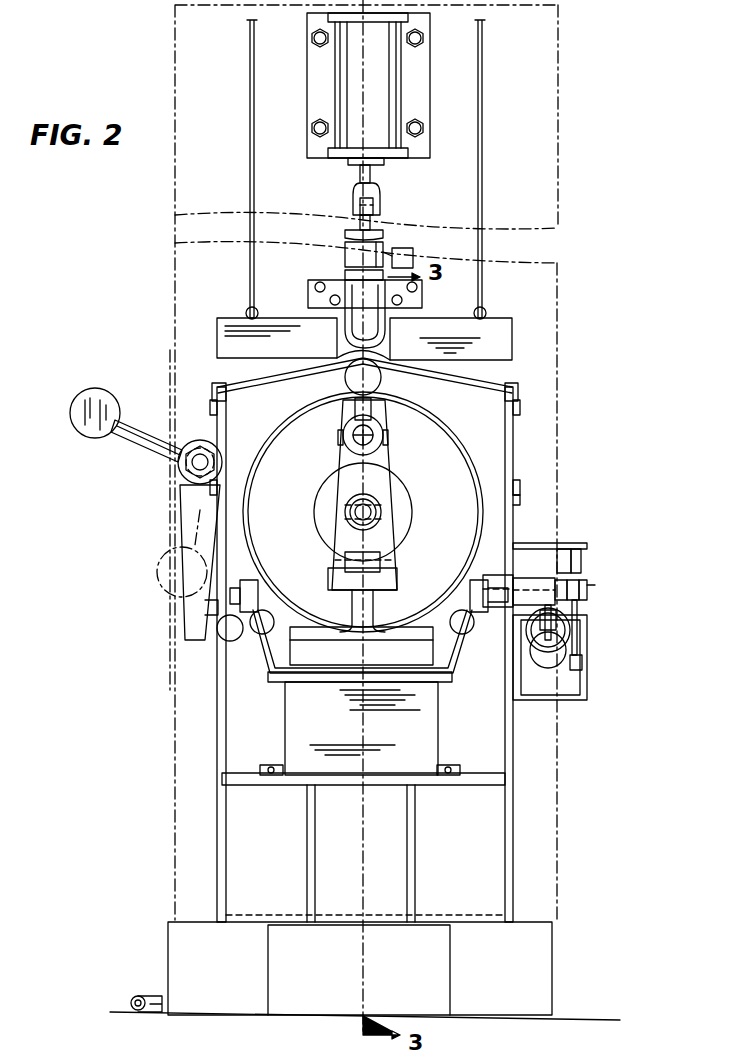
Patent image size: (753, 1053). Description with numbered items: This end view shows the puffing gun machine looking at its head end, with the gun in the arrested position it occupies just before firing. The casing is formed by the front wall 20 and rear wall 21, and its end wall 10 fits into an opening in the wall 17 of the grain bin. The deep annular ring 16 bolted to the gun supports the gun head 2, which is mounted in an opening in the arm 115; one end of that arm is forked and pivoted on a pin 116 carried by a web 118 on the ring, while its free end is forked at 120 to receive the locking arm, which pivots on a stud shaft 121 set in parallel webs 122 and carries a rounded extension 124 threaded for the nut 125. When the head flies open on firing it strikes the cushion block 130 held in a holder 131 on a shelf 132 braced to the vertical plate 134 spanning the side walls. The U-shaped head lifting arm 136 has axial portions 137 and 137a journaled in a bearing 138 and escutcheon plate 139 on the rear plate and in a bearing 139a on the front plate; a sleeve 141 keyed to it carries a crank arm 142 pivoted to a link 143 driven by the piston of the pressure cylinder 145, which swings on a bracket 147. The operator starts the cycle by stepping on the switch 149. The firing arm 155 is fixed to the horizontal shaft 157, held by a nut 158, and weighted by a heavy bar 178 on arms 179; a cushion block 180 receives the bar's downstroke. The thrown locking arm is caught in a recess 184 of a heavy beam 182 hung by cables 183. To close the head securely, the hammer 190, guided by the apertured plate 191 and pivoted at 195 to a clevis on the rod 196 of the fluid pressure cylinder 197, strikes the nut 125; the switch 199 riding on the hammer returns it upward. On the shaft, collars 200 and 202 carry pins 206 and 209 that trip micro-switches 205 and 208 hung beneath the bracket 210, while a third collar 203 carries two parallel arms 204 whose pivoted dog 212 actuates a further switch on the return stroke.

The gun head 2 is at (410, 510).
The end wall 10 is at (490, 387).
The annular ring 16 is at (470, 473).
The wall of the bin 17 is at (570, 203).
The front wall 20 is at (217, 680).
The rear wall 21 is at (520, 500).
The arm 115 is at (390, 487).
The pin 116 is at (385, 575).
The web 118 is at (375, 603).
The fork 120 is at (368, 465).
The stud shaft 121 is at (383, 437).
The parallel webs 122 is at (372, 405).
The rounded extension 124 is at (375, 445).
The nut 125 is at (390, 423).
The cushion block 130 is at (300, 648).
The holder 131 is at (295, 715).
The shelf 132 is at (290, 785).
The vertical plate 134 is at (237, 848).
The head lifting arm 136 is at (410, 690).
The axial portion 137 is at (478, 580).
The axial portion 137a is at (255, 585).
The bearing 138 is at (500, 620).
The escutcheon plate 139 is at (513, 568).
The bearing 139a is at (222, 638).
The sleeve 141 is at (490, 596).
The crank arm 142 is at (558, 620).
The link 143 is at (575, 625).
The pressure cylinder 145 is at (545, 660).
The bracket 147 is at (520, 672).
The switch 149 is at (152, 996).
The firing arm 155 is at (190, 612).
The horizontal shaft 157 is at (205, 450).
The nut 158 is at (188, 470).
The heavy bar 178 is at (102, 388).
The arms 179 is at (130, 445).
The cushion block 180 is at (200, 600).
The beam 182 is at (227, 318).
The cables 183 is at (250, 44).
The recess 184 is at (345, 340).
The hammer 190 is at (345, 323).
The apertured plate 191 is at (342, 280).
The pivot 195 is at (381, 207).
The rod 196 is at (371, 178).
The fluid pressure cylinder 197 is at (405, 97).
The switch 199 is at (407, 248).
The collar 200 is at (568, 584).
The collar 202 is at (580, 588).
The collar 203 is at (588, 594).
The parallel arms 204 is at (578, 633).
The micro-switch 205 is at (565, 549).
The pin 206 is at (528, 640).
The micro-switch 208 is at (578, 549).
The pin 209 is at (600, 598).
The bracket 210 is at (532, 543).
The dog 212 is at (585, 662).